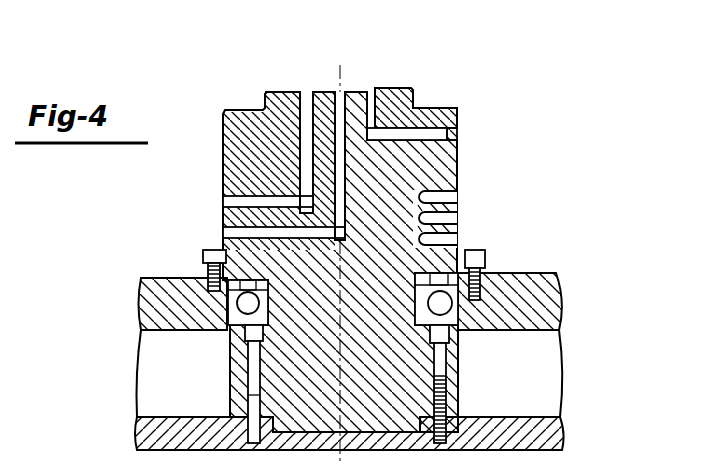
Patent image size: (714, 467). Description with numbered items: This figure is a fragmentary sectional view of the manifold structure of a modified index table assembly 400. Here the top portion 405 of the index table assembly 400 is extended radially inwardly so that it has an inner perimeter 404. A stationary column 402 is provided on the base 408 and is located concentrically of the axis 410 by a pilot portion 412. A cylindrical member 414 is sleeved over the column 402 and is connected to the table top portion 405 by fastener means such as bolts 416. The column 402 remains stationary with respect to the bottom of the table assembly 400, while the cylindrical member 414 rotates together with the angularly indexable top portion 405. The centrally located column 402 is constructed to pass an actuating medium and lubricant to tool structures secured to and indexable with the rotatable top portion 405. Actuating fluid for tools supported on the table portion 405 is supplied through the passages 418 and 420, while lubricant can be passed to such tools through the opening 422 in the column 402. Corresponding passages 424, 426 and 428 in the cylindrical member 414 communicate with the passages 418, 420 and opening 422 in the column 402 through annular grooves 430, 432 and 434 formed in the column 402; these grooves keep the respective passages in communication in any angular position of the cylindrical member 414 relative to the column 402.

The index table assembly 400 is at (185, 210).
The stationary column 402 is at (397, 100).
The inner perimeter 404 is at (450, 318).
The top portion 405 is at (520, 280).
The base 408 is at (490, 433).
The axis 410 is at (340, 87).
The pilot portion 412 is at (292, 415).
The cylindrical member 414 is at (440, 177).
The bolts 416 is at (472, 253).
The passage 418 is at (310, 102).
The passage 420 is at (333, 97).
The opening 422 is at (372, 88).
The passage 424 is at (223, 232).
The passage 426 is at (223, 200).
The passage 428 is at (452, 133).
The annular groove 430 is at (455, 244).
The annular groove 432 is at (456, 205).
The annular groove 434 is at (393, 137).